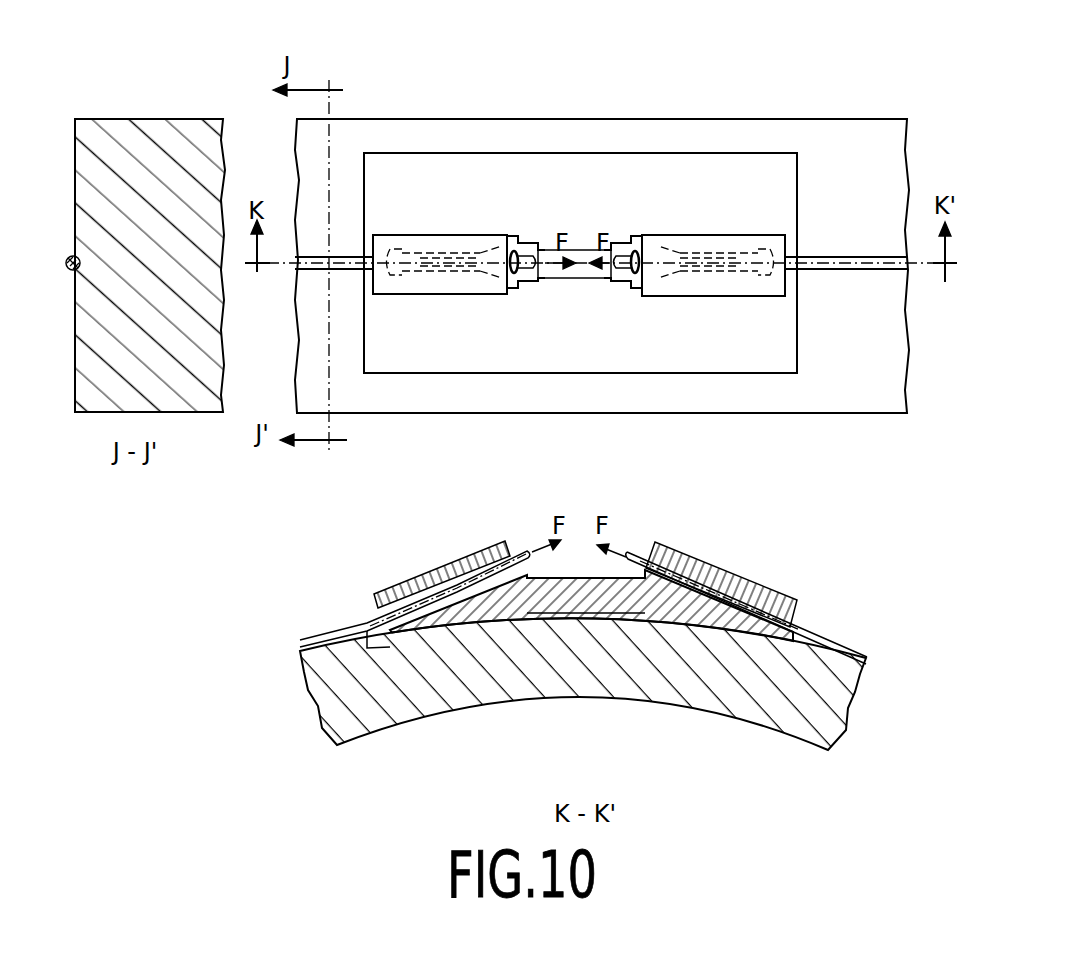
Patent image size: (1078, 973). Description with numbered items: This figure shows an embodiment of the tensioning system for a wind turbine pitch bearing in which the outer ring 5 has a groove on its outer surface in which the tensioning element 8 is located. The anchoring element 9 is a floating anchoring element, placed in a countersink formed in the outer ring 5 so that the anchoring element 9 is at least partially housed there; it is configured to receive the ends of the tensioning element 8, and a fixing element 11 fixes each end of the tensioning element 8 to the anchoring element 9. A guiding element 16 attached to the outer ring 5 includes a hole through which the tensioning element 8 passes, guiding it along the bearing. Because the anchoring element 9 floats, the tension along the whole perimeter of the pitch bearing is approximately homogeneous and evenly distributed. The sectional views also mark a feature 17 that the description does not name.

The outer ring 5 is at (190, 153).
The tensioning element 8 is at (67, 258).
The anchoring element 9 is at (707, 237).
The fixing element 11 is at (516, 290).
The guiding element 16 is at (443, 172).
The wire guide 17 is at (80, 264).